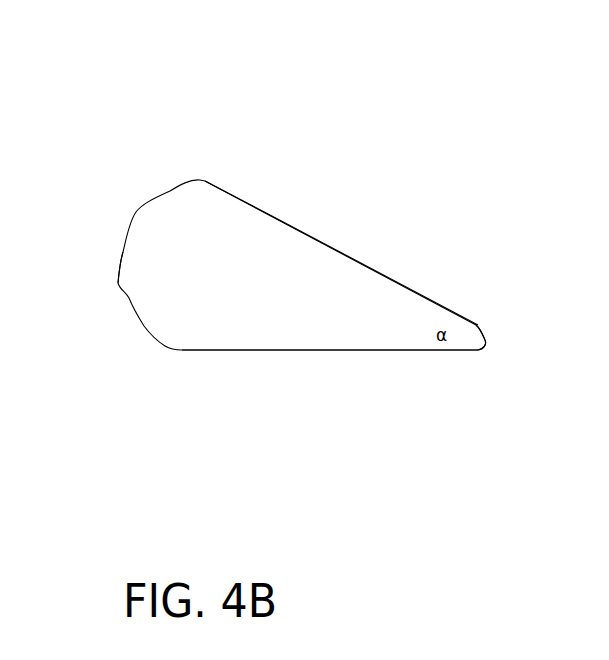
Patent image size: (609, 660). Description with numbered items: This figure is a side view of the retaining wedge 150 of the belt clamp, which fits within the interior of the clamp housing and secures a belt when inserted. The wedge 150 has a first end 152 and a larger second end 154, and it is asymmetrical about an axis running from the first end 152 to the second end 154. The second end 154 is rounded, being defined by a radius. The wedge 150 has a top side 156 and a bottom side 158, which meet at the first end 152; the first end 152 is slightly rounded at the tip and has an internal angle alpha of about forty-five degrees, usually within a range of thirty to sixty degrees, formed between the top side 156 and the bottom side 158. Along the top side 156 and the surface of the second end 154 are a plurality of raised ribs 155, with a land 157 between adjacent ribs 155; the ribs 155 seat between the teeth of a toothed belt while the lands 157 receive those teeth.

The wedge 150 is at (140, 92).
The first end 152 is at (485, 347).
The second end 154 is at (123, 253).
The raised ribs 155 is at (395, 275).
The top side 156 is at (242, 190).
The land 157 is at (295, 225).
The bottom side 158 is at (310, 350).